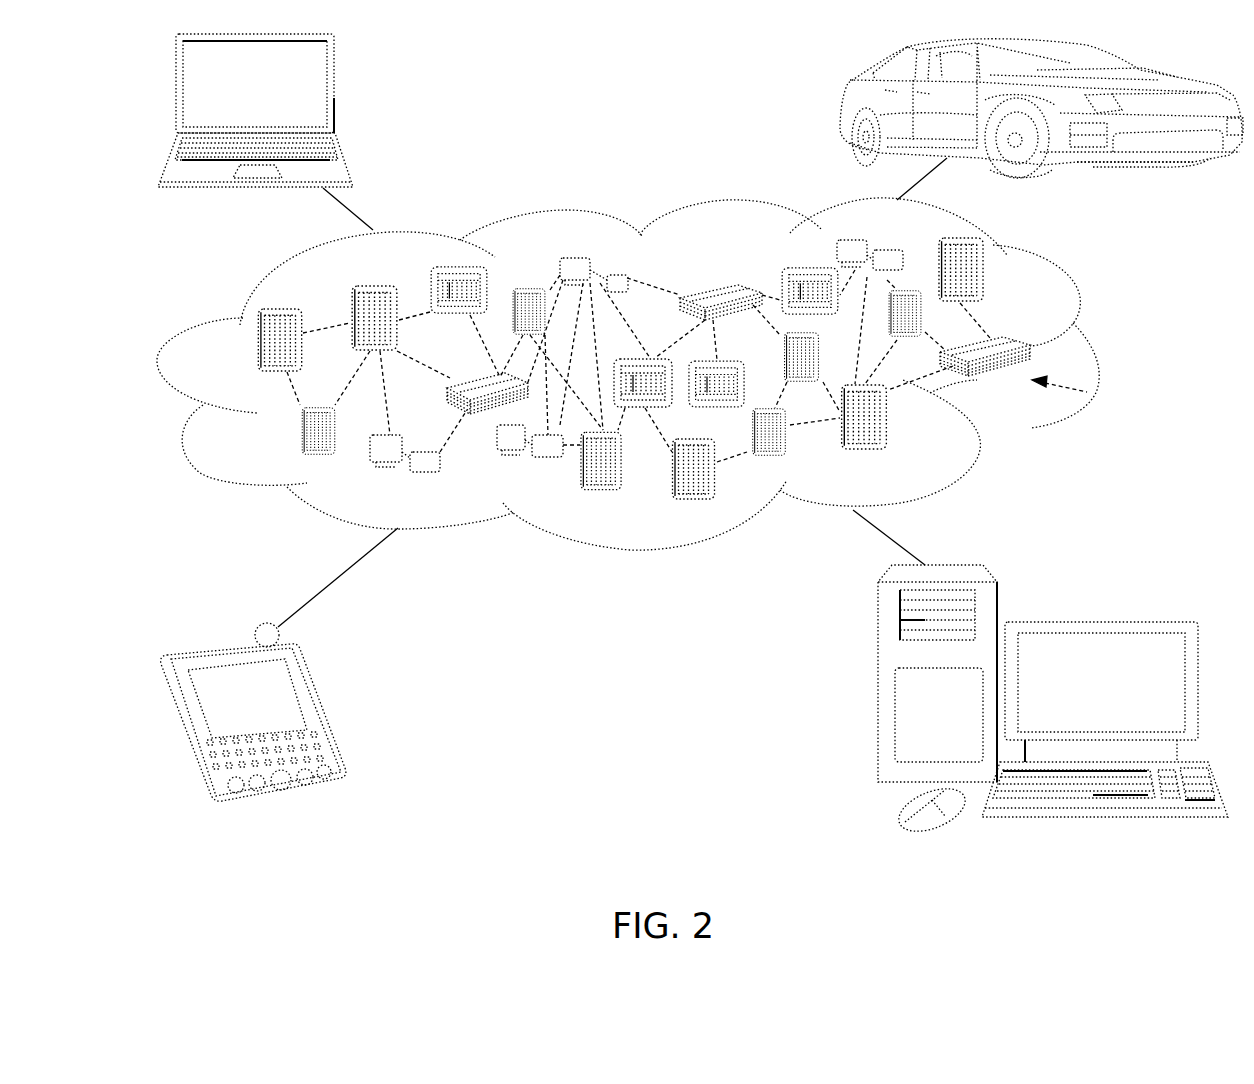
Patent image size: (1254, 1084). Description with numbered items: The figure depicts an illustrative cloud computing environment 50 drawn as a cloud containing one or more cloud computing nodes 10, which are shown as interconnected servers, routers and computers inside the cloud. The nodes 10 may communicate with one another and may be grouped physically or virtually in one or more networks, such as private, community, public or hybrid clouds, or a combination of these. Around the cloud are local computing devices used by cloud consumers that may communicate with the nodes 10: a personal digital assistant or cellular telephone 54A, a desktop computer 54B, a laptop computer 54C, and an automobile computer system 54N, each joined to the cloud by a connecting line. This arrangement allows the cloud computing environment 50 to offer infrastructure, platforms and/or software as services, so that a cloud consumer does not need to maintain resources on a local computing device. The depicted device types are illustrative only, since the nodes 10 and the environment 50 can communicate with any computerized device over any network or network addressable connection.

The cloud computing node 10 is at (1085, 394).
The cloud computing environment 50 is at (1097, 350).
The personal digital assistant (PDA) or cellular telephone 54A is at (322, 707).
The desktop computer 54B is at (1097, 620).
The laptop computer 54C is at (335, 92).
The automobile computer system 54N is at (840, 108).